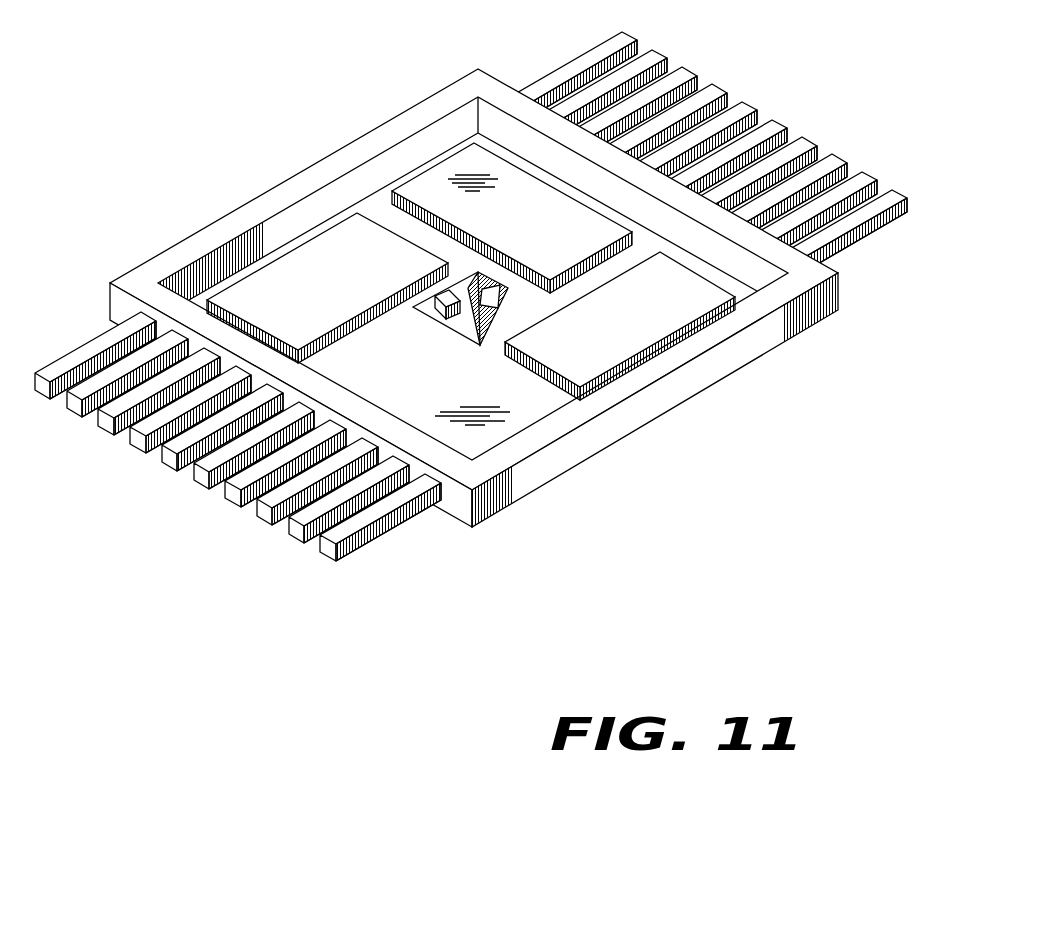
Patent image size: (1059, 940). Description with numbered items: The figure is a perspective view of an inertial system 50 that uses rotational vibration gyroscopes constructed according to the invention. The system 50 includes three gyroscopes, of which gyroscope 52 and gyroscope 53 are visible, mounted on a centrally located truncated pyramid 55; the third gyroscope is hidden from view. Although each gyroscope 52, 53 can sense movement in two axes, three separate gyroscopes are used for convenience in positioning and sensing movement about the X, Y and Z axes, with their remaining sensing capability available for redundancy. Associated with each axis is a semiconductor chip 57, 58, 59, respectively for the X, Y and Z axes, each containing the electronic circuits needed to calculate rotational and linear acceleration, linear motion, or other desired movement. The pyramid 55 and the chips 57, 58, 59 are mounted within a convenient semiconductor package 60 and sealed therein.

The inertial system 50 is at (471, 347).
The gyroscope 52 is at (423, 308).
The gyroscope 53 is at (493, 327).
The truncated pyramid 55 is at (452, 327).
The semiconductor chip 57 is at (312, 220).
The semiconductor chip 58 is at (597, 251).
The semiconductor chip 59 is at (593, 375).
The semiconductor package 60 is at (718, 382).